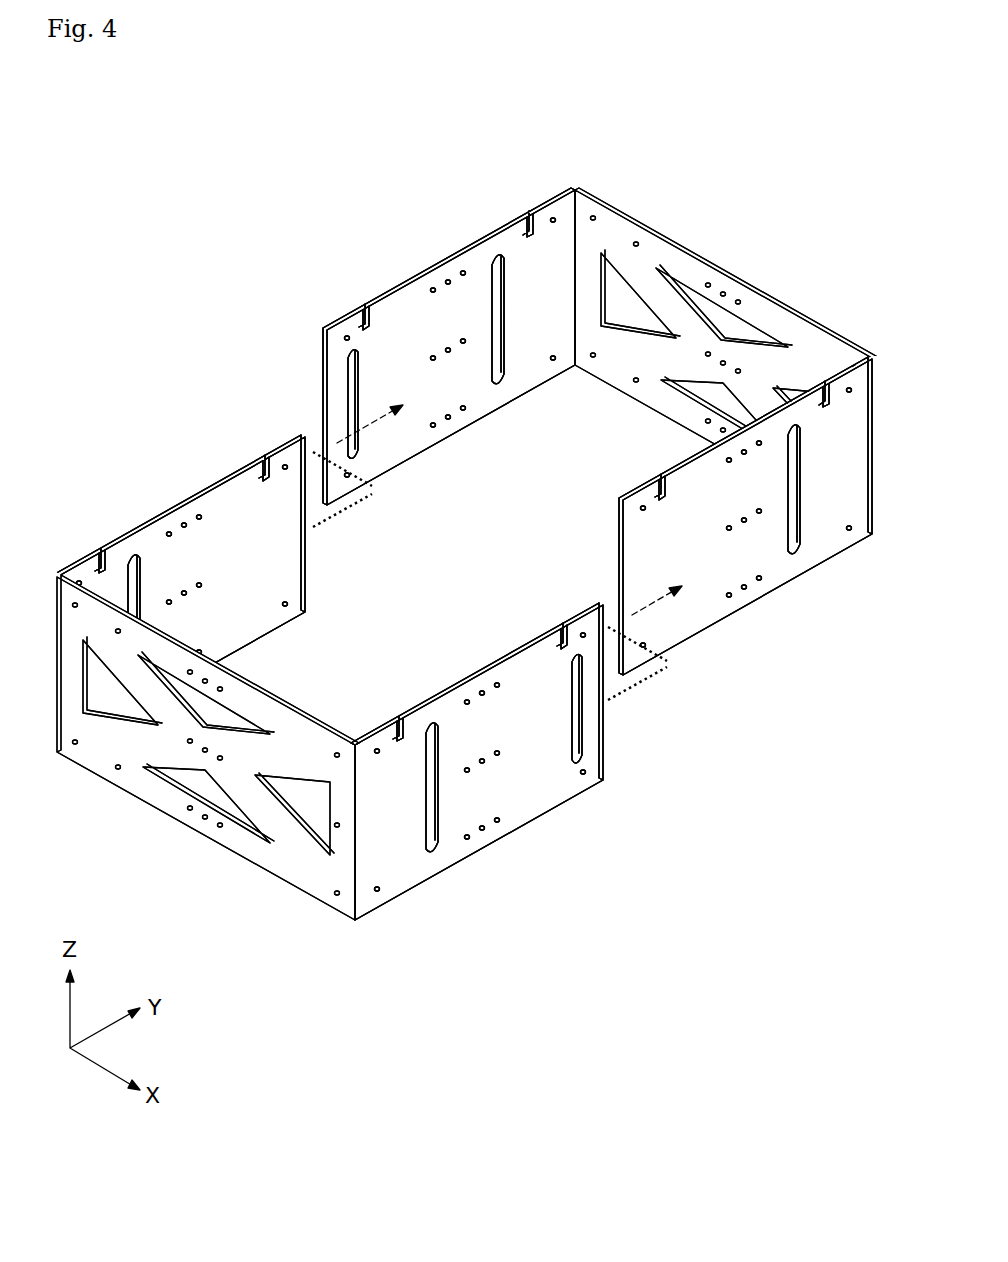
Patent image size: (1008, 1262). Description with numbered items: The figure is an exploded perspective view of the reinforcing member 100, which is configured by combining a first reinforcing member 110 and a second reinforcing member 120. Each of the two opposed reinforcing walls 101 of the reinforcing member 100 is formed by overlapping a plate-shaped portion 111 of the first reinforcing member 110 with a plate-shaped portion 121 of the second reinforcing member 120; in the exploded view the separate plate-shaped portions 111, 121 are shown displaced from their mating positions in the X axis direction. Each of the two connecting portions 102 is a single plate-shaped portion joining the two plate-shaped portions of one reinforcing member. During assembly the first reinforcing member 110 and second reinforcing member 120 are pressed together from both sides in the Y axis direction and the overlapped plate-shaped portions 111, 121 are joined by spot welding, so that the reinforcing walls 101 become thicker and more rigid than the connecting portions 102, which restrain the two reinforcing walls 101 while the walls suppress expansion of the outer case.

The reinforcing member 100 is at (464, 554).
The first reinforcing member 110 is at (592, 812).
The second reinforcing member 120 is at (720, 652).
The reinforcing wall 101 is at (163, 373).
The plate-shaped portion 111 is at (232, 474).
The plate-shaped portion 121 is at (340, 320).
The connecting portion 102 is at (780, 303).